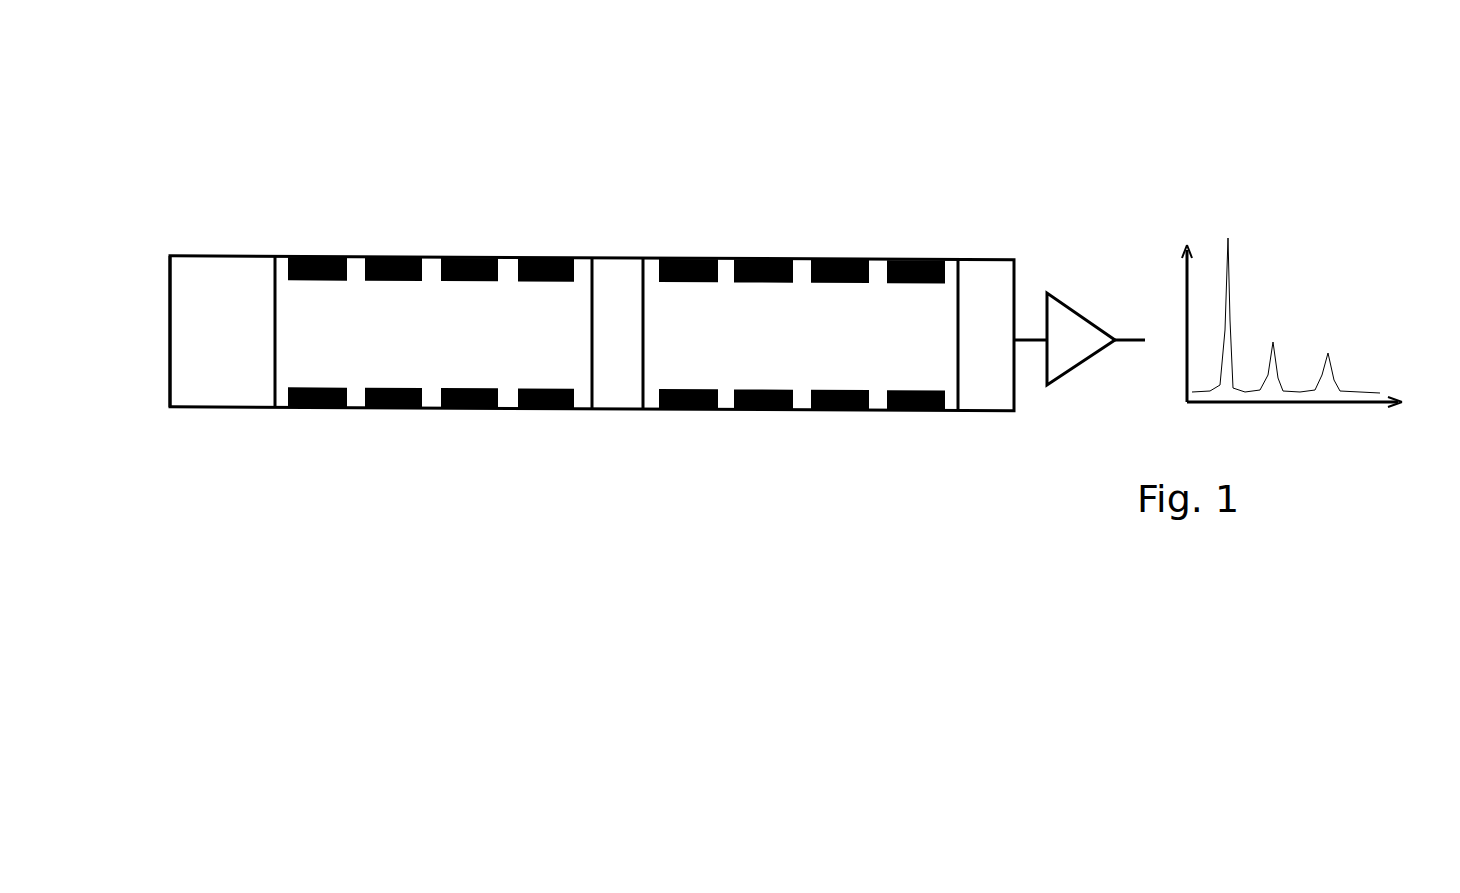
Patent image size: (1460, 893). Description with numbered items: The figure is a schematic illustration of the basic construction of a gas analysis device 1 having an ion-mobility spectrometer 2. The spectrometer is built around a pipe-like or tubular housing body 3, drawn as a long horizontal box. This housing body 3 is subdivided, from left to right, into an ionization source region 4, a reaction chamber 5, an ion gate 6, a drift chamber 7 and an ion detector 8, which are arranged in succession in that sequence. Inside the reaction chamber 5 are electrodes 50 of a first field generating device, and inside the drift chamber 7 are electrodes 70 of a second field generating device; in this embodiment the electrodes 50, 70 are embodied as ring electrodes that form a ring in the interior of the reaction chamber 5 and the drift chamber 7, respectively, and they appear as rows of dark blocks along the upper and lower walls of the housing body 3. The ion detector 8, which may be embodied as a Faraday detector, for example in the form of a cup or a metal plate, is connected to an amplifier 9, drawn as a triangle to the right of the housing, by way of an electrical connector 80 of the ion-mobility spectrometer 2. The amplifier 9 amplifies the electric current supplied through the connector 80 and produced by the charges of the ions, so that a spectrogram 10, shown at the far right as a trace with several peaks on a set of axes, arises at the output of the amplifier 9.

The gas analysis device 1 is at (389, 145).
The ion-mobility spectrometer 2 is at (938, 246).
The housing body 3 is at (172, 303).
The ionization source region 4 is at (224, 388).
The reaction chamber 5 is at (357, 358).
The electrodes 50 is at (540, 257).
The ion gate 6 is at (618, 381).
The drift chamber 7 is at (806, 366).
The electrodes 70 is at (898, 256).
The ion detector 8 is at (987, 380).
The electrical connector 80 is at (1018, 332).
The amplifier 9 is at (1080, 365).
The spectrogram 10 is at (1306, 283).